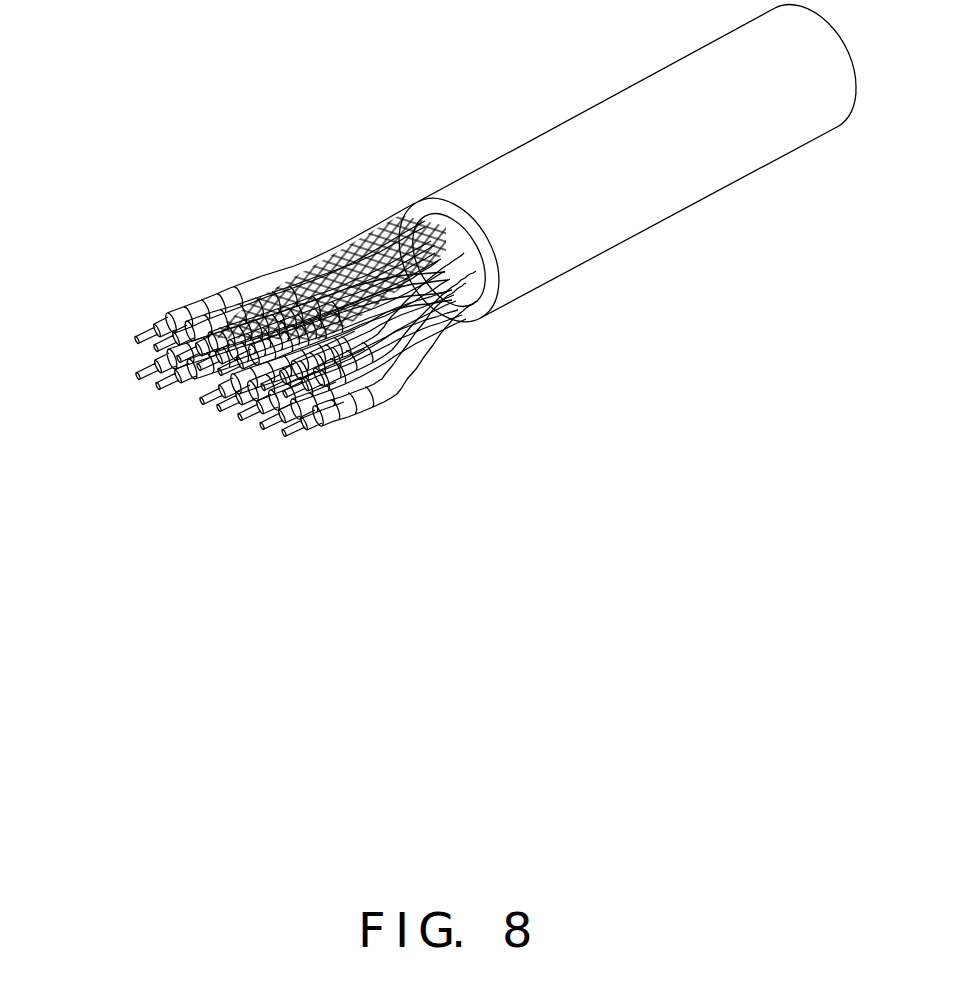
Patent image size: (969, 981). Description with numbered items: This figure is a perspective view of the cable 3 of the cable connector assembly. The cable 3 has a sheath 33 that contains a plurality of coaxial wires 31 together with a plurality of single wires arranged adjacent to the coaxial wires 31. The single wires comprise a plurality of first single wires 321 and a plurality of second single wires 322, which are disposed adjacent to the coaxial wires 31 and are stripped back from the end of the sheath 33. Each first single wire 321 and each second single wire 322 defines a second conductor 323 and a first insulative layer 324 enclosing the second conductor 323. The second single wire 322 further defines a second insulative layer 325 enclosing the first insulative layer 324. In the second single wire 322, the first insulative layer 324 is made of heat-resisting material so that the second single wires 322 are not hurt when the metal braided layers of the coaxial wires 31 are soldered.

The cable 3 is at (398, 154).
The sheath 33 is at (543, 167).
The coaxial wire 31 is at (172, 317).
The first single wire 321 is at (210, 372).
The second single wire 322 is at (268, 378).
The second conductor 323 is at (153, 360).
The first insulative layer 324 is at (273, 307).
The second insulative layer 325 is at (273, 305).